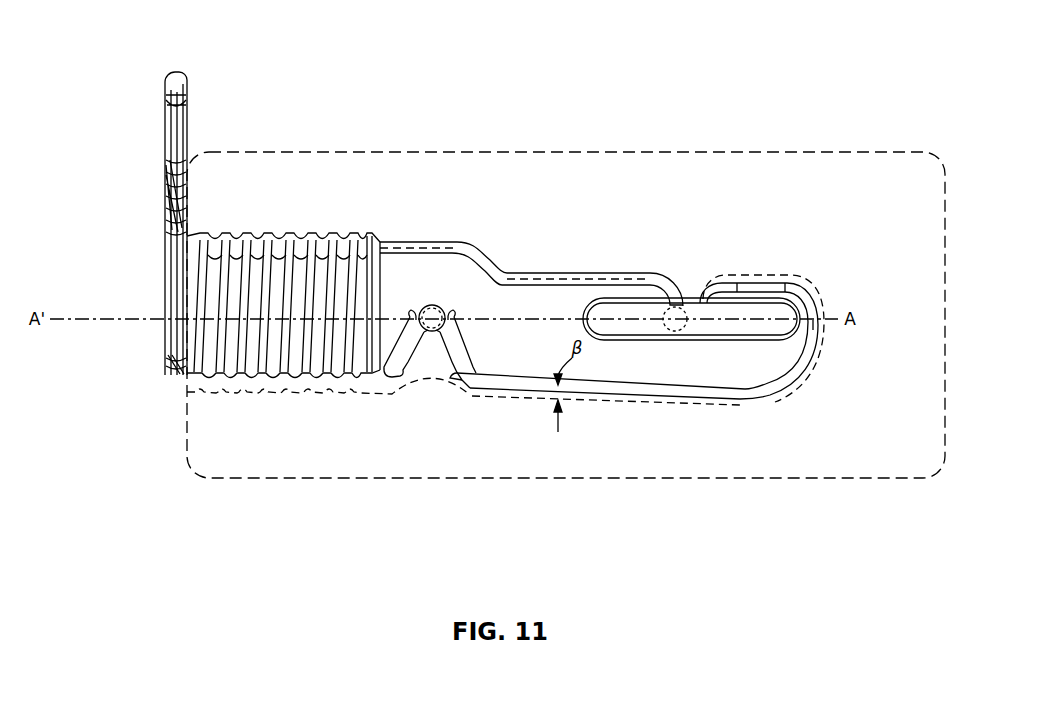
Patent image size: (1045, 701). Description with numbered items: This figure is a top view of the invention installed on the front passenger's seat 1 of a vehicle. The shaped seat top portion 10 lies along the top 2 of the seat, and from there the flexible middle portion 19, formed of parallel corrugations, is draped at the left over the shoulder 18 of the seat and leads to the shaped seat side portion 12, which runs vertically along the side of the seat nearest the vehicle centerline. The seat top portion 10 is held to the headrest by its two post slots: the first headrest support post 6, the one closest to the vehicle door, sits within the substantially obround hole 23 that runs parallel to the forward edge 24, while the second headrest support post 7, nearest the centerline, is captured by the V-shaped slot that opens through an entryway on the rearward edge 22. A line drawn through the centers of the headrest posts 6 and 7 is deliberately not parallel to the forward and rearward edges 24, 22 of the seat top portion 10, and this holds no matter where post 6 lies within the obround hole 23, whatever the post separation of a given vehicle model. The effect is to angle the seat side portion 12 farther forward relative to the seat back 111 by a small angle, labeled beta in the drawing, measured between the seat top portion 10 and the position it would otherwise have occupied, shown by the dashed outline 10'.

The front passenger's seat 1 is at (846, 127).
The top of the vehicle seat 2 is at (865, 239).
The first headrest support post 6 is at (672, 306).
The second headrest support post 7 is at (433, 305).
The seat top portion 10 is at (424, 303).
The dashed outline of the seat top portion 10' is at (419, 308).
The seat side portion 12 is at (204, 93).
The shoulder of the vehicle seat 18 is at (218, 455).
The flexible middle portion 19 is at (328, 314).
The rearward edge 22 is at (532, 391).
The obround hole 23 is at (742, 315).
The forward edge 24 is at (583, 273).
The seat back 111 is at (590, 478).